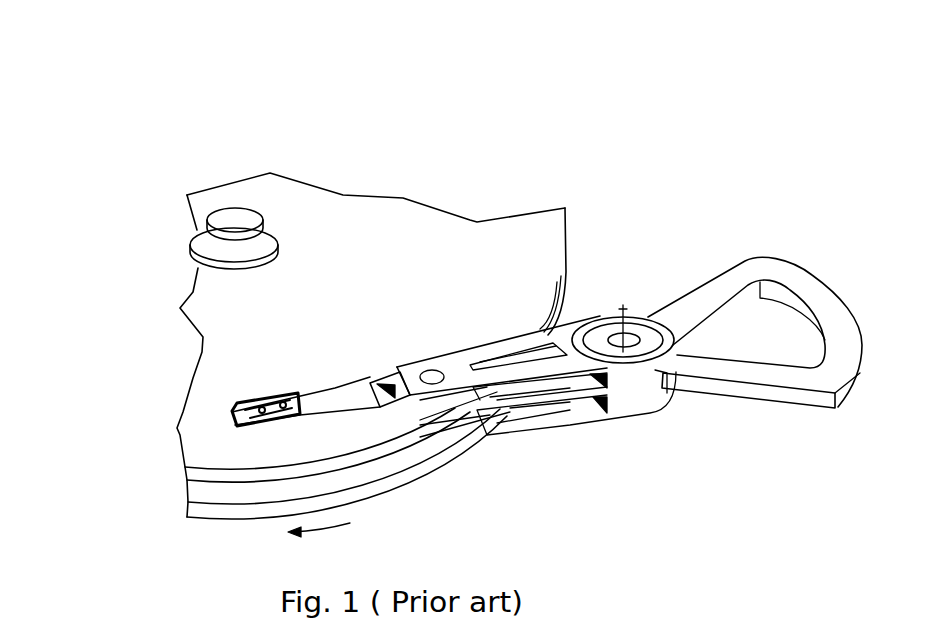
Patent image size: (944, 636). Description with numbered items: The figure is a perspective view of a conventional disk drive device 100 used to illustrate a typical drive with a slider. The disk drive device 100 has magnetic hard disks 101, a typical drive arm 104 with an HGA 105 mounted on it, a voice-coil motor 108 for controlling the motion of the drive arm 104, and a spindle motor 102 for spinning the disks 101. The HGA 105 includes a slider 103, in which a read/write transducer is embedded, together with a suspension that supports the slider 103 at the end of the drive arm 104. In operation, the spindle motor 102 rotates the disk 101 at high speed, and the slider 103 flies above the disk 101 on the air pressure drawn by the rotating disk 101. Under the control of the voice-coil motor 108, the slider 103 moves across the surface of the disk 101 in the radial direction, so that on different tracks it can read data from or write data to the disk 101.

The disk drive device 100 is at (82, 42).
The magnetic hard disk 101 is at (208, 325).
The spindle motor 102 is at (244, 218).
The slider 103 is at (223, 417).
The drive arm 104 is at (558, 332).
The HGA (head gimbal assembly) 105 is at (295, 392).
The voice-coil motor 108 is at (715, 292).